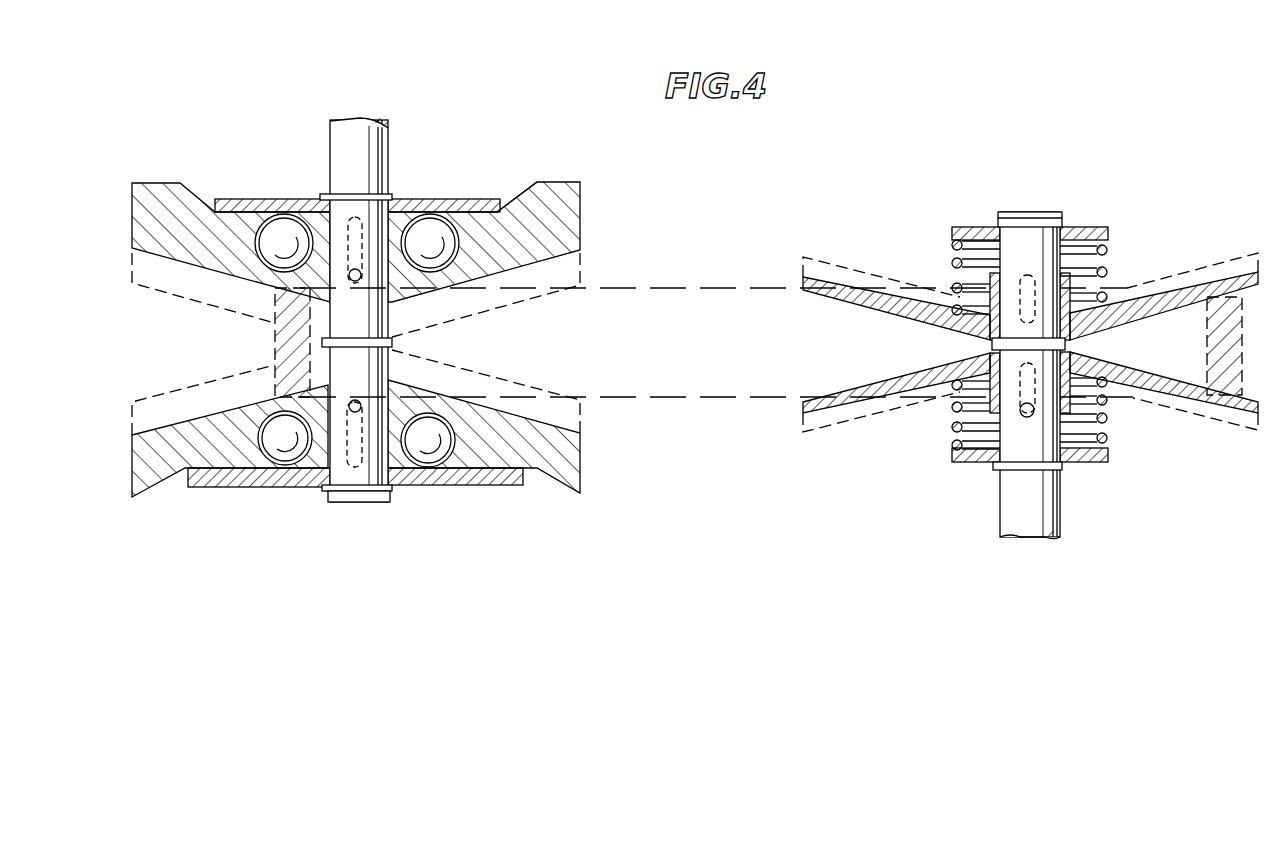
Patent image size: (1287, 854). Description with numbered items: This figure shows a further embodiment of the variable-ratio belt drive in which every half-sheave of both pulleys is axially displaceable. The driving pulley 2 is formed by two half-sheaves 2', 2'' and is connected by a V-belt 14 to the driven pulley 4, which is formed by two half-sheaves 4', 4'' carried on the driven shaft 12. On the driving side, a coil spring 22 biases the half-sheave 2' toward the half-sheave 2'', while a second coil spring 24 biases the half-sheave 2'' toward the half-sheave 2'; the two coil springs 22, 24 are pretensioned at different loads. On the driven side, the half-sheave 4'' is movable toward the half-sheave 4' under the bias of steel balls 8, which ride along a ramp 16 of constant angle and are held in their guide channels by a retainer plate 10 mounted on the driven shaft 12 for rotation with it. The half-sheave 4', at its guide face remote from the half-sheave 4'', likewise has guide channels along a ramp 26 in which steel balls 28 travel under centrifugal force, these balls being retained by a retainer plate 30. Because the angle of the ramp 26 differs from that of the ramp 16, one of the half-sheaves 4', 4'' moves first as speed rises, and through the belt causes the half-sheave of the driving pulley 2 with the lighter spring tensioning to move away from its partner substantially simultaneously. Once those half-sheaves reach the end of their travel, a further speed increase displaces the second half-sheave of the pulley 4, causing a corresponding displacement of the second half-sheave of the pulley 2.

The driving pulley 2 is at (1030, 374).
The half-sheave 2' is at (1030, 417).
The half-sheave 2'' is at (1030, 283).
The driven pulley 4 is at (366, 275).
The half-sheave 4' is at (370, 228).
The half-sheave 4'' is at (356, 457).
The steel balls 8 is at (452, 463).
The retainer plate 10 is at (410, 485).
The driven shaft 12 is at (390, 138).
The V-belt 14 is at (700, 265).
The ramp 16 is at (230, 487).
The coil spring 22 is at (1110, 420).
The coil spring 24 is at (1108, 263).
The ramp 26 is at (513, 207).
The steel balls 28 is at (437, 222).
The retainer plate 30 is at (421, 199).